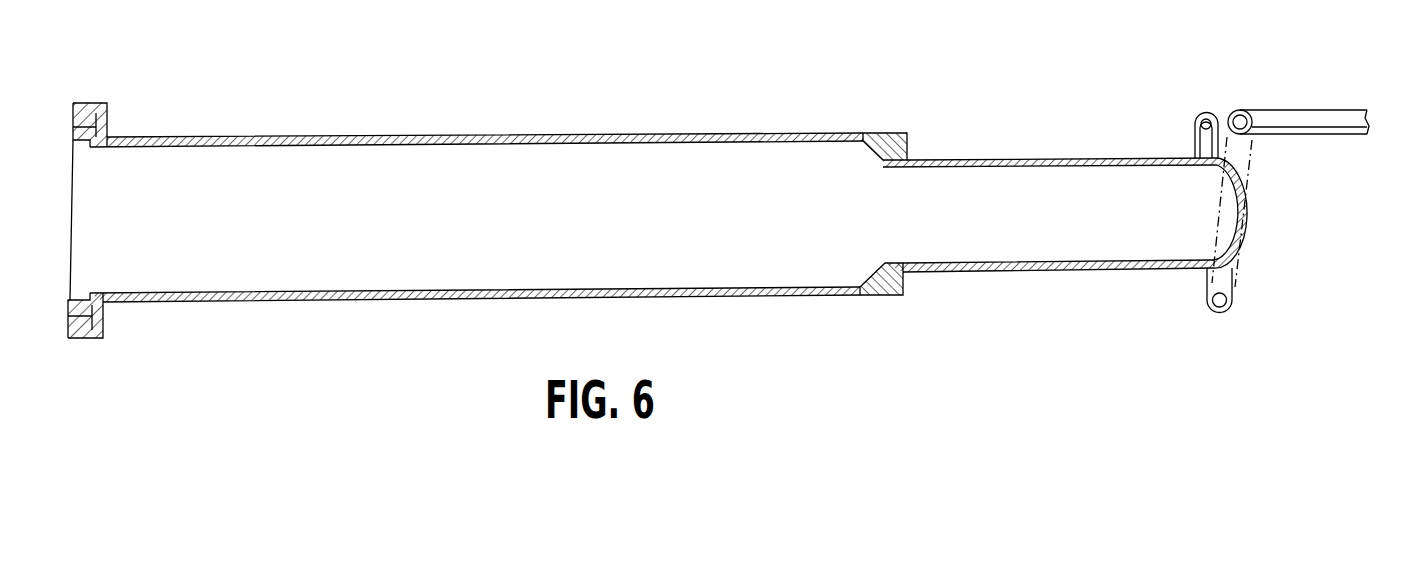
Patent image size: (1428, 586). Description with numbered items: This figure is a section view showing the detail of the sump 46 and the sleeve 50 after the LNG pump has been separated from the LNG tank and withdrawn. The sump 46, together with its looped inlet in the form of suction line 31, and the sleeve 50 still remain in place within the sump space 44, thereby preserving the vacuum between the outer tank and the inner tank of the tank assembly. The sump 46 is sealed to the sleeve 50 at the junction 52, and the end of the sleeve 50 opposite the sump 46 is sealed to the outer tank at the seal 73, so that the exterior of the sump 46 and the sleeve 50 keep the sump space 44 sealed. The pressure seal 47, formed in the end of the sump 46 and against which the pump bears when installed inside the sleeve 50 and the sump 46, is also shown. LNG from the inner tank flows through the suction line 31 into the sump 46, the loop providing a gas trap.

The seal 73 is at (106, 134).
The sleeve 50 is at (433, 137).
The sump space 44 is at (670, 338).
The pressure seal 47 is at (883, 137).
The junction 52 is at (924, 301).
The sump 46 is at (1017, 158).
The suction line 31 is at (1287, 113).